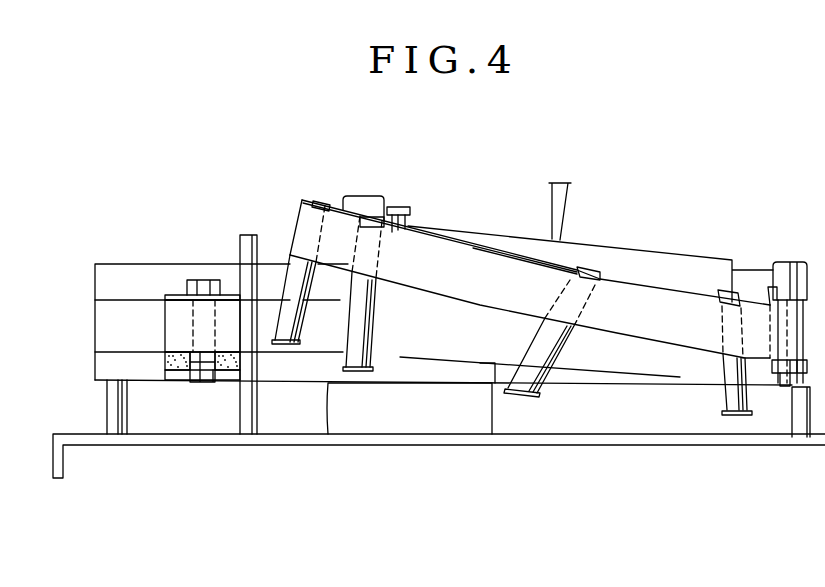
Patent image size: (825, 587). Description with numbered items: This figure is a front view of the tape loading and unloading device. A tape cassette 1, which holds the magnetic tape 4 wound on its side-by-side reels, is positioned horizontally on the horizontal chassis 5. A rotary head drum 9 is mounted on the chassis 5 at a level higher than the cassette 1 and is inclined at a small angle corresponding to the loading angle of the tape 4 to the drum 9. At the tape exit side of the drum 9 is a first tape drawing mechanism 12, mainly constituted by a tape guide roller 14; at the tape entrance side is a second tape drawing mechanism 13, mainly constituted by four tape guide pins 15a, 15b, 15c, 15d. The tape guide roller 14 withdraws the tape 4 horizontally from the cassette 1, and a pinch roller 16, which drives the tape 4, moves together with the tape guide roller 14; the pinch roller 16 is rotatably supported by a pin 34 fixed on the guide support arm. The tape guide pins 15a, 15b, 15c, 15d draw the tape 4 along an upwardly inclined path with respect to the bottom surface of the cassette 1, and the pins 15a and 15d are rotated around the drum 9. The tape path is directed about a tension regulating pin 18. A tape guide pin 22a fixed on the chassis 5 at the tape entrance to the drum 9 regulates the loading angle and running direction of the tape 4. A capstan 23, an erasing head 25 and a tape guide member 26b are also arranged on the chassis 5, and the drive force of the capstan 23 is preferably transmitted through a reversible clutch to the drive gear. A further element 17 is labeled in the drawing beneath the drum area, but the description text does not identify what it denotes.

The tape cassette 1 is at (144, 278).
The magnetic tape 4 is at (684, 310).
The chassis 5 is at (425, 446).
The rotary head drum 9 is at (642, 258).
The first tape drawing mechanism 12 is at (150, 323).
The second tape drawing mechanism 13 is at (298, 193).
The tape guide roller 14 is at (199, 367).
The tape guide pin 15a is at (318, 201).
The tape guide pin 15b is at (372, 320).
The tape guide pin 15c is at (556, 346).
The tape guide pin 15d is at (728, 397).
The pinch roller 16 is at (163, 358).
The lower block 17 is at (328, 437).
The tension regulating pin 18 is at (775, 388).
The tape guide pin 22a is at (410, 221).
The capstan 23 is at (248, 238).
The erasing head 25 is at (362, 197).
The tape guide member 26b is at (785, 262).
The pin 34 is at (203, 280).